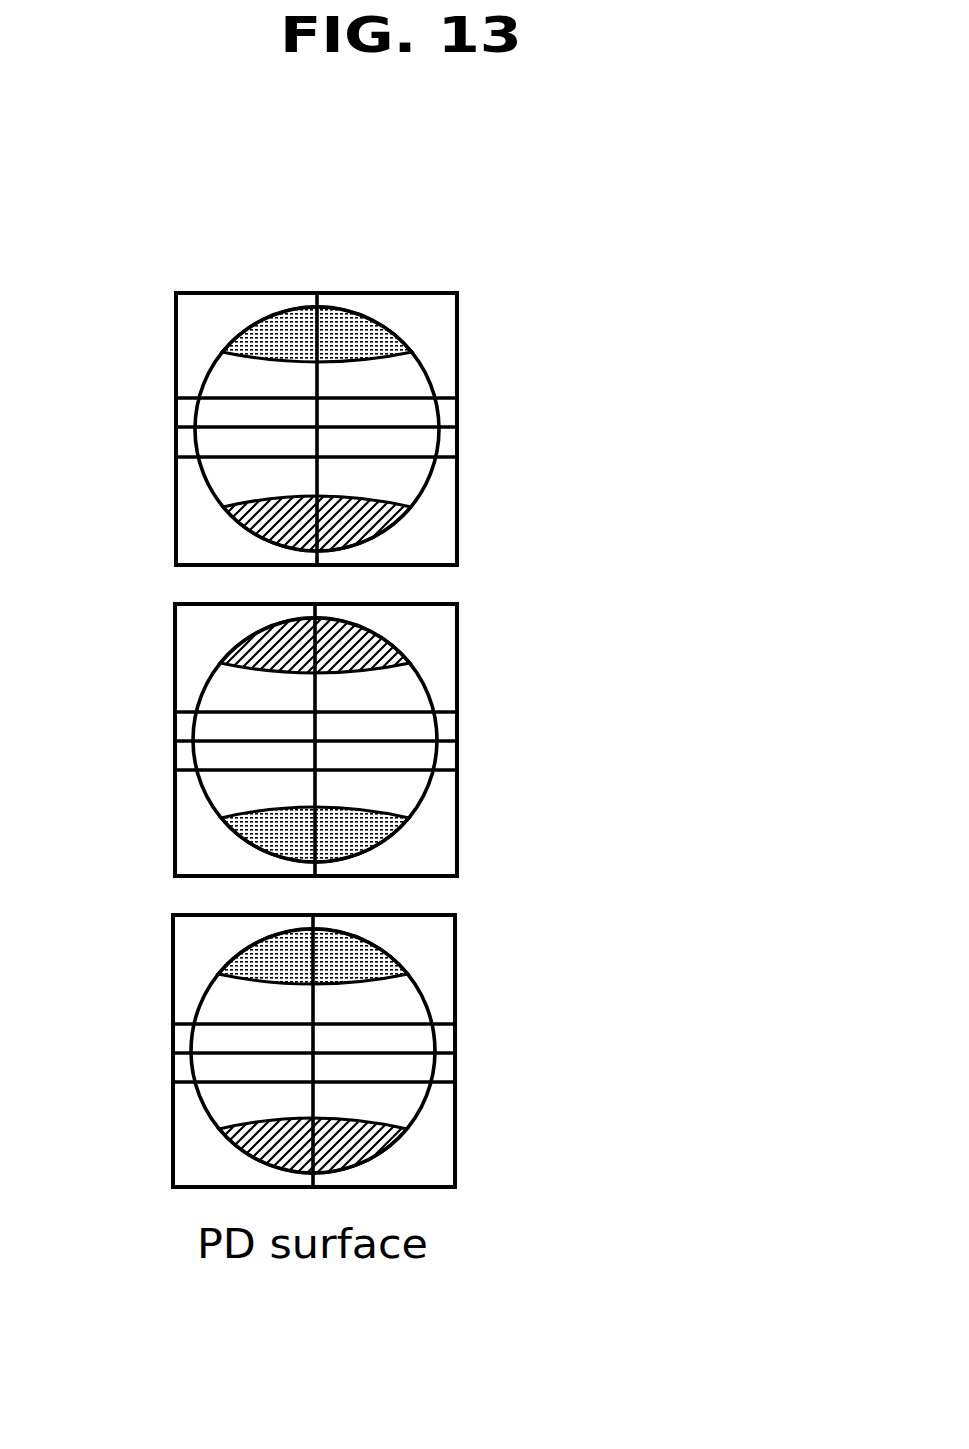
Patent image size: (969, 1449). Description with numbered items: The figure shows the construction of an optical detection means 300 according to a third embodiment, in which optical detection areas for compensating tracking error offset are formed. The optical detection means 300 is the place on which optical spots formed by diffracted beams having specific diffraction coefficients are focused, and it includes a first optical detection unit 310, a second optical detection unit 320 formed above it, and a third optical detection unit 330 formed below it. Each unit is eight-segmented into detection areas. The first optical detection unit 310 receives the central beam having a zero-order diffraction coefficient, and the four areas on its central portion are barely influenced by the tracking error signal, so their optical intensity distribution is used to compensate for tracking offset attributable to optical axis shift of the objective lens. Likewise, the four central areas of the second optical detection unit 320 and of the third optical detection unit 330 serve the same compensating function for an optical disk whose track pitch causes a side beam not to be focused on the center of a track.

The optical detection means 300 is at (494, 250).
The second optical detection unit 320 is at (457, 297).
The first optical detection unit 310 is at (457, 611).
The third optical detection unit 330 is at (455, 921).